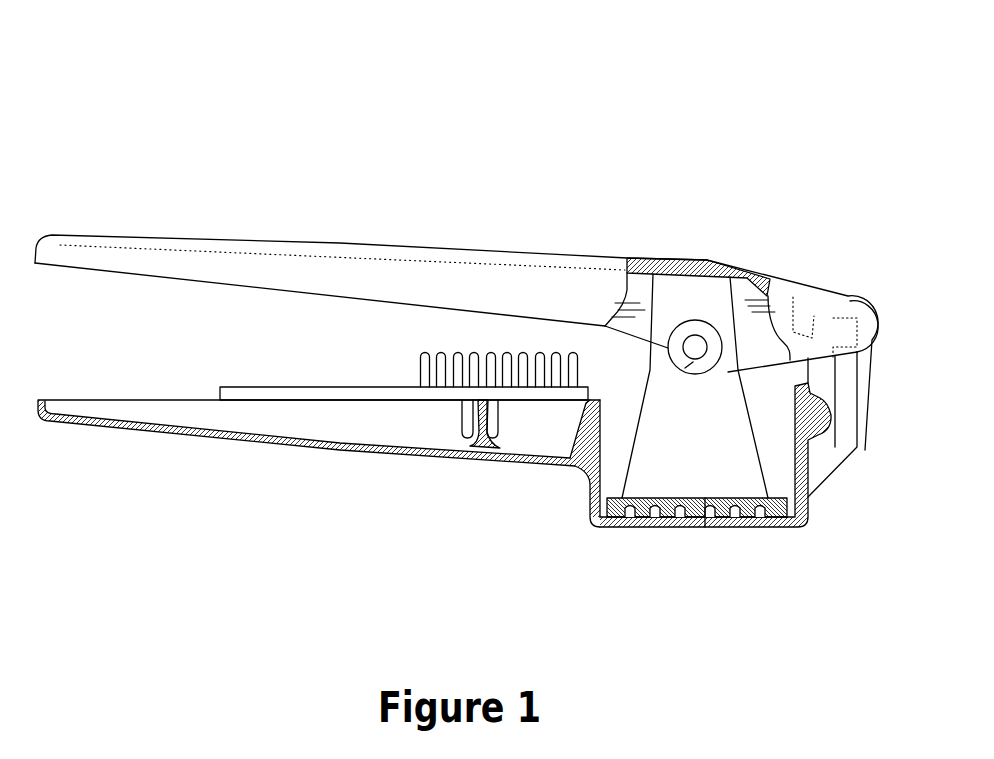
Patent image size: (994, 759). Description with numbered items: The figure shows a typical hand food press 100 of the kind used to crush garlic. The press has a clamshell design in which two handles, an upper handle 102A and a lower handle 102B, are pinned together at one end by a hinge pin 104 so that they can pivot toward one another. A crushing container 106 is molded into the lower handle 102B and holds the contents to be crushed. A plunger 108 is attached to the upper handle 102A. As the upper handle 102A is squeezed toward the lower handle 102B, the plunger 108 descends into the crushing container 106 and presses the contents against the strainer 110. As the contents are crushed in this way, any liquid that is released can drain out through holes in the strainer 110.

The hand food press 100 is at (291, 46).
The upper handle 102A is at (146, 216).
The lower handle 102B is at (146, 462).
The hinge pin 104 is at (855, 293).
The crushing container 106 is at (581, 478).
The plunger 108 is at (639, 376).
The strainer 110 is at (775, 540).